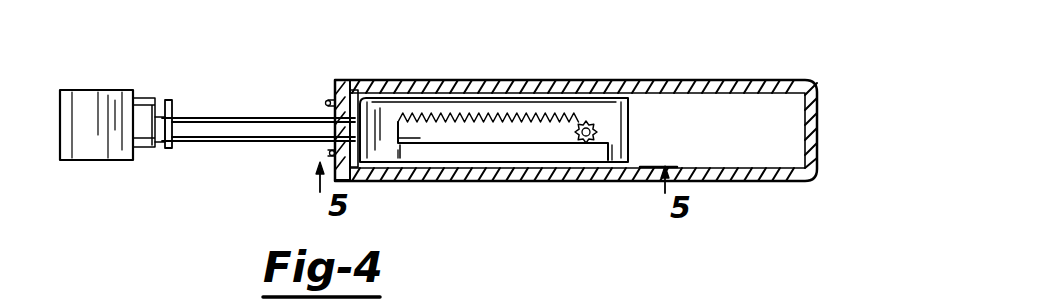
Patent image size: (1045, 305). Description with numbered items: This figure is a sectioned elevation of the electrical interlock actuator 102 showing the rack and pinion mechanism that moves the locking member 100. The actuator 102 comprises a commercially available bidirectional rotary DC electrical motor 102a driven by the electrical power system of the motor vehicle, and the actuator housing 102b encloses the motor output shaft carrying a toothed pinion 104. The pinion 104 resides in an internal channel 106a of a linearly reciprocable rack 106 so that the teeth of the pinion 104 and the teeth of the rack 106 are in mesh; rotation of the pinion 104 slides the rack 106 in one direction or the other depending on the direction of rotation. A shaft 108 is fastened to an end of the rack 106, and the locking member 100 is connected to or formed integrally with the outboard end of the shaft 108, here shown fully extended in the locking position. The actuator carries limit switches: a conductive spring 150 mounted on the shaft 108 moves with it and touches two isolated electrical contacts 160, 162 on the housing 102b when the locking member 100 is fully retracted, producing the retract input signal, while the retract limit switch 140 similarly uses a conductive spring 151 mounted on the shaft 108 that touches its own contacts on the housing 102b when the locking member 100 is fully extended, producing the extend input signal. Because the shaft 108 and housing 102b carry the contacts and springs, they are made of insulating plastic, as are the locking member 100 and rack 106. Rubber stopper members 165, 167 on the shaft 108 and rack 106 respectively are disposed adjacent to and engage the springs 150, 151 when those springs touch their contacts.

The locking member 100 is at (80, 89).
The electrical actuator 102 is at (600, 177).
The bidirectional rotary DC electrical motor 102a is at (553, 81).
The actuator housing 102b is at (742, 182).
The toothed pinion 104 is at (594, 115).
The rack 106 is at (507, 150).
The internal channel 106a is at (478, 128).
The shaft 108 is at (222, 125).
The retract limit switch 140 is at (343, 80).
The conductive spring 150 is at (170, 100).
The conductive spring 151 is at (362, 93).
The electrical contact 160 is at (325, 103).
The electrical contact 162 is at (329, 153).
The rubber stopper member 165 is at (143, 150).
The rubber stopper member 167 is at (376, 108).